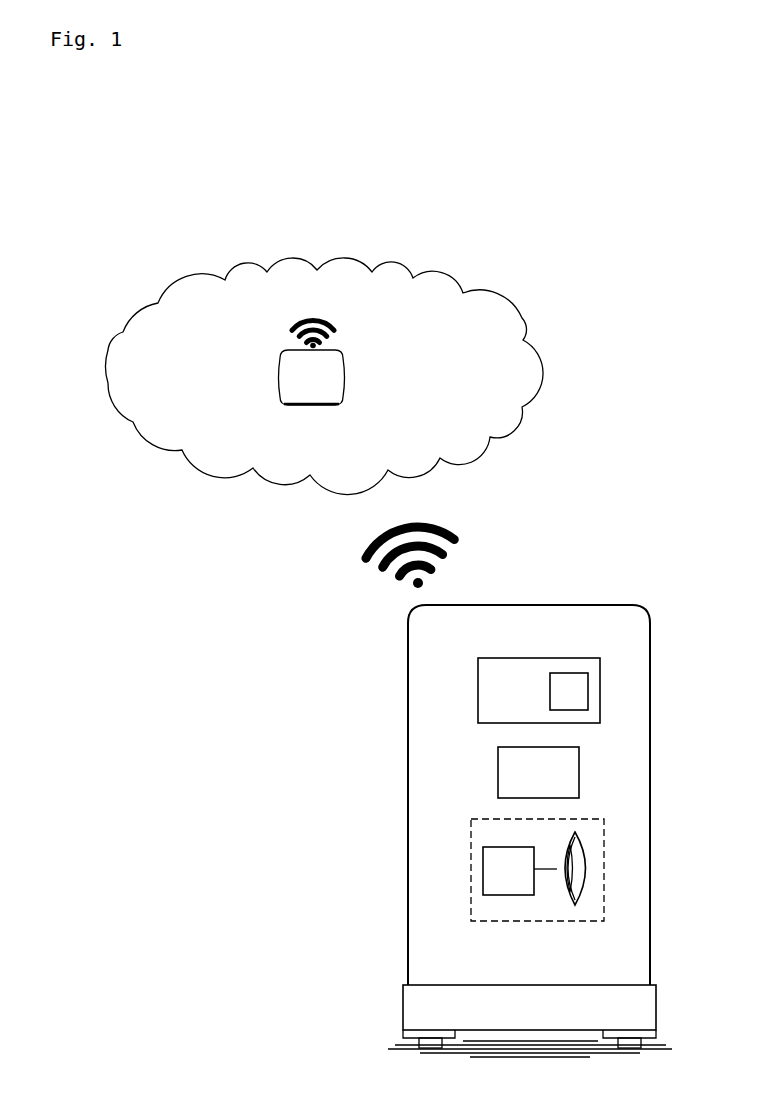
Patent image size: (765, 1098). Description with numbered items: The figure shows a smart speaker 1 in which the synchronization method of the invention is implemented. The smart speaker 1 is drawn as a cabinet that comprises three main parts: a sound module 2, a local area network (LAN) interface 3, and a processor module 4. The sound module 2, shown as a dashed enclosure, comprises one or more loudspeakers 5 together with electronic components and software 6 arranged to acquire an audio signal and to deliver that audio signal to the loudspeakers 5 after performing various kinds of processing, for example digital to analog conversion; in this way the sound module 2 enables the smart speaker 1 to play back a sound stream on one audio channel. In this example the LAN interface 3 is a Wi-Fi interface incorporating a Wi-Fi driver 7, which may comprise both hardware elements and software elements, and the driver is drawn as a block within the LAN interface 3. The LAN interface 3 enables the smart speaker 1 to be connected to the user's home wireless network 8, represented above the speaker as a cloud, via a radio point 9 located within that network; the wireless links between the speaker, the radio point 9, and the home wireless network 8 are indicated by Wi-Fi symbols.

The smart speaker 1 is at (651, 740).
The sound module 2 is at (540, 921).
The local area network (LAN) interface 3 is at (490, 692).
The processor module 4 is at (538, 772).
The loudspeaker 5 is at (592, 866).
The electronic components and software 6 is at (520, 871).
The Wi-Fi driver 7 is at (569, 691).
The home wireless network 8 is at (522, 318).
The radio point 9 is at (343, 377).